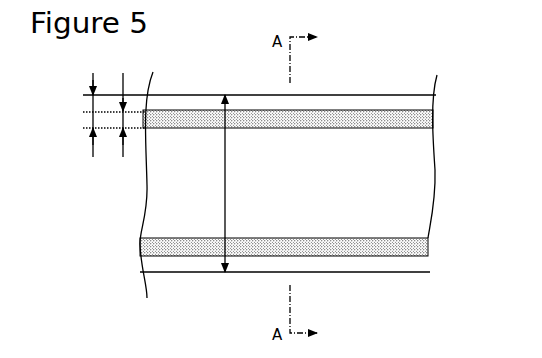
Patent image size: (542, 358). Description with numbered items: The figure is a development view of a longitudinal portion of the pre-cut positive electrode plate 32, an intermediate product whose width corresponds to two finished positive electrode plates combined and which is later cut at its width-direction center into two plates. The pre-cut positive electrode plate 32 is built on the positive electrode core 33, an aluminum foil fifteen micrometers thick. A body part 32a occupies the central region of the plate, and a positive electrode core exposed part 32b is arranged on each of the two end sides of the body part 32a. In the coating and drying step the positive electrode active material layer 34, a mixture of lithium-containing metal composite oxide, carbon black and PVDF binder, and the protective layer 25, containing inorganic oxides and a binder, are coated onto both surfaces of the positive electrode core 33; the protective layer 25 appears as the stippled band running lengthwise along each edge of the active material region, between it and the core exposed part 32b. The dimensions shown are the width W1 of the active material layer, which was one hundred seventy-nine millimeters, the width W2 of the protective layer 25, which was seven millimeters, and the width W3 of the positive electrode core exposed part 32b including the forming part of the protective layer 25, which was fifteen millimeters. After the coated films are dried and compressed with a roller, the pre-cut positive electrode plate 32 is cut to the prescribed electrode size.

The protective layer 25 is at (432, 111).
The pre-cut positive electrode plate 32 is at (294, 178).
The body part 32a is at (417, 203).
The positive electrode core exposed part 32b is at (341, 107).
The positive electrode core 33 is at (178, 103).
The positive electrode active material layer 34 is at (412, 177).
The width of the positive electrode active material layer W1 is at (224, 186).
The width of the protective layer W2 is at (121, 129).
The width of the positive electrode core exposed part W3 is at (92, 112).